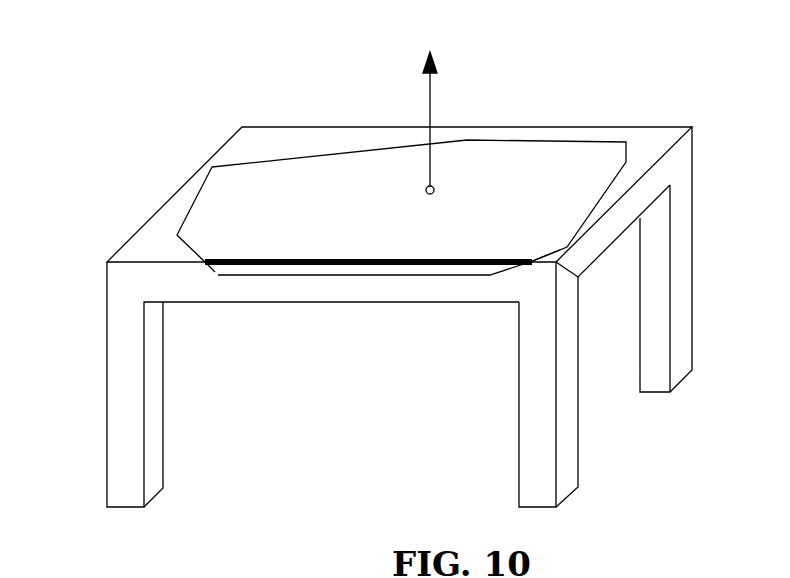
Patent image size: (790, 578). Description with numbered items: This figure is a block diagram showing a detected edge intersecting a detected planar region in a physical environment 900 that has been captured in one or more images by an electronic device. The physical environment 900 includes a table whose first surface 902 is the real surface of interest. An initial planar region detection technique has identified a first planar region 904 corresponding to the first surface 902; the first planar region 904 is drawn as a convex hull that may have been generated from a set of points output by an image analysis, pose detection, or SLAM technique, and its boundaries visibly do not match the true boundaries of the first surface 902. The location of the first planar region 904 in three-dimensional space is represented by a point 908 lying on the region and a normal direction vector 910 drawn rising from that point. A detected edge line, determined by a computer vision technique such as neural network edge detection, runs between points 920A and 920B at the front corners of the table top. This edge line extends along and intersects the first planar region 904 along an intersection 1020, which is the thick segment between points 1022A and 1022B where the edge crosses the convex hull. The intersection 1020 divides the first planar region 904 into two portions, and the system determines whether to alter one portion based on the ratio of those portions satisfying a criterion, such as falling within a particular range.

The physical environment 900 is at (372, 280).
The first surface 902 is at (272, 153).
The first planar region 904 is at (251, 191).
The point 908 is at (425, 190).
The normal direction vector 910 is at (428, 100).
The point 920A is at (107, 262).
The point 920B is at (556, 262).
The intersection 1020 is at (350, 262).
The point 1022A is at (205, 262).
The point 1022B is at (532, 262).